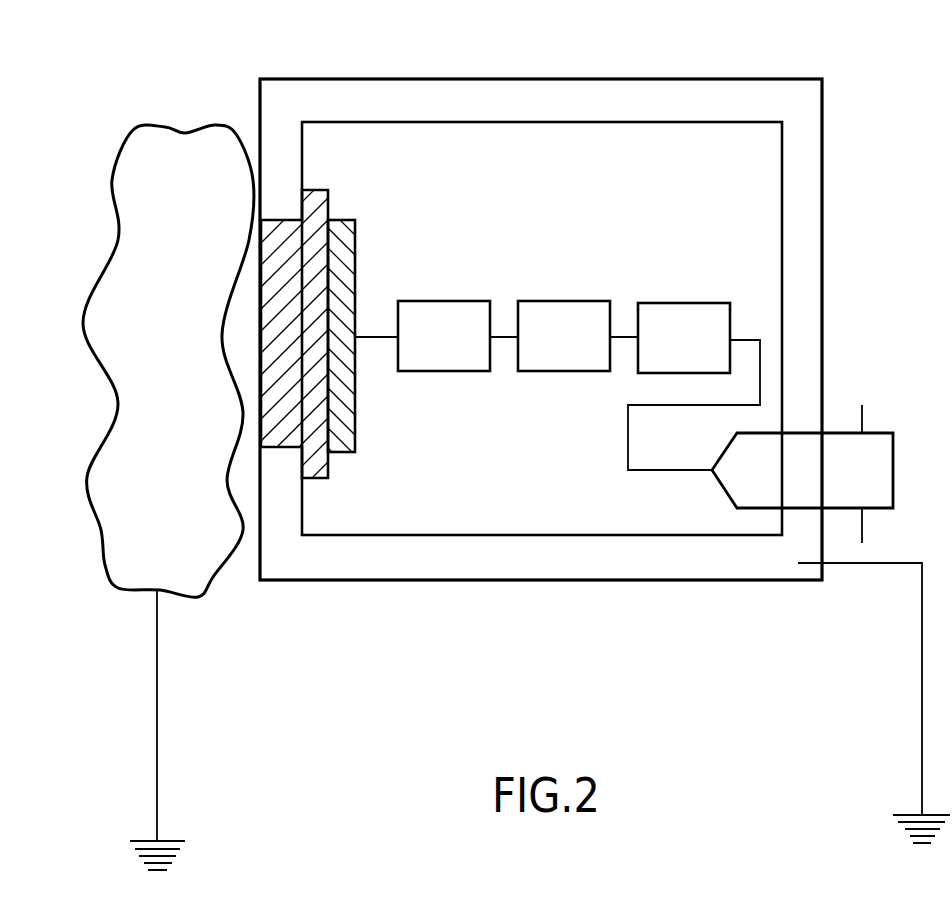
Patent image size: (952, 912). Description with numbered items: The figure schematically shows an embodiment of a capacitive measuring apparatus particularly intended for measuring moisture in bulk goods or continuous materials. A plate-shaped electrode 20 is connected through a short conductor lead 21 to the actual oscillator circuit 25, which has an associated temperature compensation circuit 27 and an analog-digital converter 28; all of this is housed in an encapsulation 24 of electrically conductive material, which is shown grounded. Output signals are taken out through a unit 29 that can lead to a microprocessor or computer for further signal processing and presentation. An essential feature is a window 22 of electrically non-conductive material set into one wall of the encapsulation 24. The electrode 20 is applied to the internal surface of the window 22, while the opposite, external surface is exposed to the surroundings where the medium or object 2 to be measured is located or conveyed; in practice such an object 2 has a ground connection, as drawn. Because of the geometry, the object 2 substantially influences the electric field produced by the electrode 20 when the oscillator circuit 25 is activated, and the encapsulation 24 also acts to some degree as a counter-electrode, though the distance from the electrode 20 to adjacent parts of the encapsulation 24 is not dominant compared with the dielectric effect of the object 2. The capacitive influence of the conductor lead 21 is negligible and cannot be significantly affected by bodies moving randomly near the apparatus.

The object 2 is at (137, 152).
The plate-shaped electrode 20 is at (340, 237).
The conductor lead 21 is at (387, 336).
The window 22 is at (314, 193).
The encapsulation 24 is at (448, 568).
The oscillator circuit 25 is at (420, 301).
The temperature compensation circuit 27 is at (540, 301).
The analog-digital converter 28 is at (660, 303).
The output unit 29 is at (835, 433).